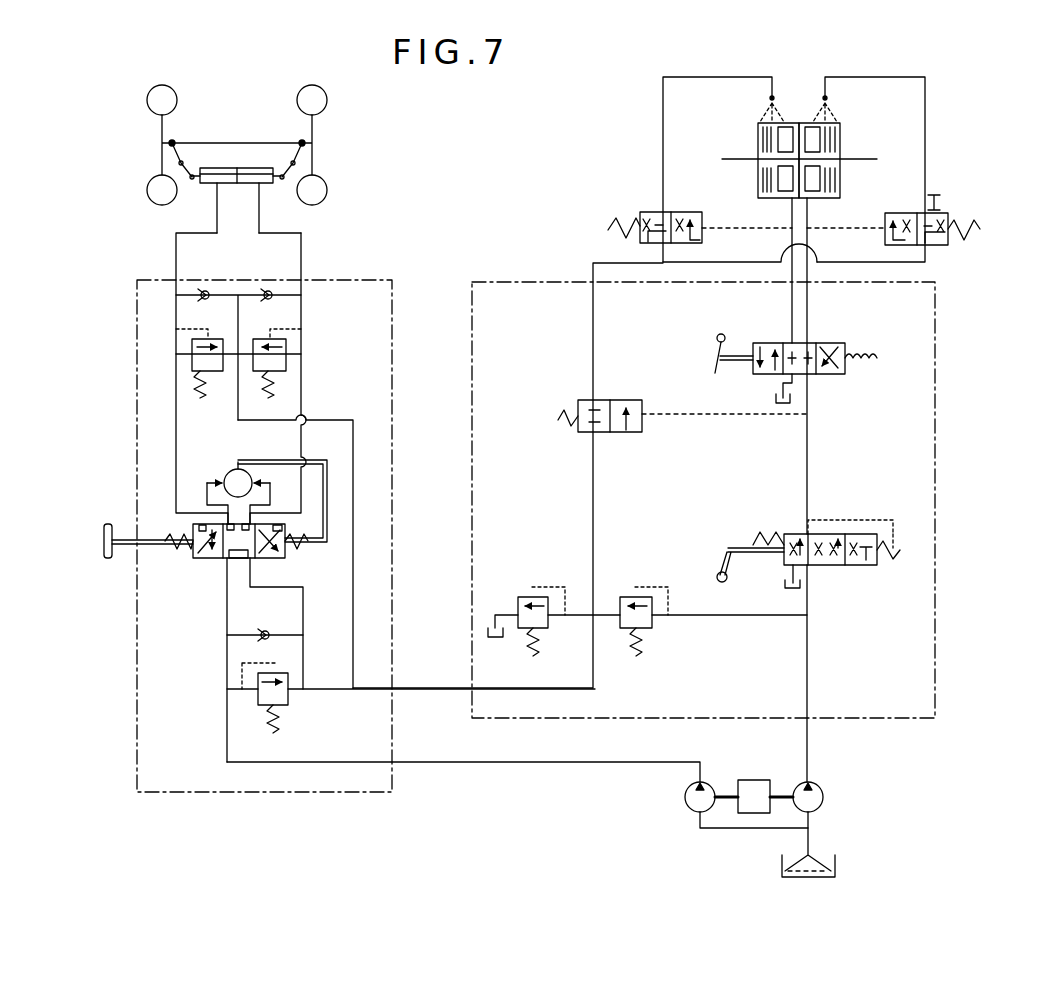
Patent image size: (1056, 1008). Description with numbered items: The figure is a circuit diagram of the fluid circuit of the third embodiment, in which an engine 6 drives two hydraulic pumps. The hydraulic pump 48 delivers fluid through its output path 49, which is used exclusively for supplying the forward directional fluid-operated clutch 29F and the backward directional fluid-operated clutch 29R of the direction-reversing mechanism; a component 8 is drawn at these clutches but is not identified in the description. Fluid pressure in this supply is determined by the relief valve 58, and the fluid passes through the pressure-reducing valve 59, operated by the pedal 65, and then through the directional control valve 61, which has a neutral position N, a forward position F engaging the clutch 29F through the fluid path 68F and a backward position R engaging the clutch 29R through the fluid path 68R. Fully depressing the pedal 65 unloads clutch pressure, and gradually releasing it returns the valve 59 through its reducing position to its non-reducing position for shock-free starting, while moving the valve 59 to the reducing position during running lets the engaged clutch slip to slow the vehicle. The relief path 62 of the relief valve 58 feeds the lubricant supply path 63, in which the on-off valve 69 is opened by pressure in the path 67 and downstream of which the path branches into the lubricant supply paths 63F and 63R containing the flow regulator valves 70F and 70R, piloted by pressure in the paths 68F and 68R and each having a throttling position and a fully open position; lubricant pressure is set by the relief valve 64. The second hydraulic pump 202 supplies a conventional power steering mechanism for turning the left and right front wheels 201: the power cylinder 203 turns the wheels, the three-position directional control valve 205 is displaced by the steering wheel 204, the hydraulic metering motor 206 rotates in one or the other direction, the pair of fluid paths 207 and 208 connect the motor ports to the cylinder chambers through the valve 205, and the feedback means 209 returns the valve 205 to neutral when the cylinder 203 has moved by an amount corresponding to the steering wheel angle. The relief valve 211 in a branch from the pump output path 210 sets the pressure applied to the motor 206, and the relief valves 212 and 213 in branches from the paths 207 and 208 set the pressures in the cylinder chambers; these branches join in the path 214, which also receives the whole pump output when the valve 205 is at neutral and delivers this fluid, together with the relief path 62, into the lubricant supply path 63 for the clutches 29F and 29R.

The front wheels 201 is at (150, 113).
The power cylinder 203 is at (205, 185).
The steering wheel 204 is at (108, 522).
The three-position directional control valve 205 is at (200, 560).
The hydraulic metering motor 206 is at (231, 471).
The fluid path 207 is at (176, 395).
The fluid path 208 is at (301, 388).
The feedback means 209 is at (327, 494).
The output path 210 is at (472, 764).
The relief valve 211 is at (290, 700).
The relief valve 212 is at (176, 348).
The relief valve 213 is at (286, 341).
The path 214 is at (370, 690).
The hydraulic pump 202 is at (685, 798).
The engine 6 is at (757, 780).
The hydraulic pump 48 is at (823, 797).
The output path 49 is at (808, 740).
The relief valve 58 is at (652, 628).
The pressure-reducing valve 59 is at (877, 565).
The directional control valve 61 is at (845, 343).
The relief path 62 is at (607, 617).
The lubricant supply path 63 is at (595, 467).
The lubricant supply path 63F is at (663, 132).
The lubricant supply path 63R is at (925, 148).
The relief valve 64 is at (520, 597).
The pedal 65 is at (674, 525).
The path 67 is at (807, 412).
The fluid path 68F is at (792, 300).
The fluid path 68R is at (807, 310).
The on-off valve 69 is at (642, 400).
The flow regulator valve 70F is at (640, 212).
The flow regulator valve 70R is at (948, 243).
The forward directional fluid-operated clutch 29F is at (758, 142).
The backward directional fluid-operated clutch 29R is at (841, 142).
The shaft 8 is at (857, 160).